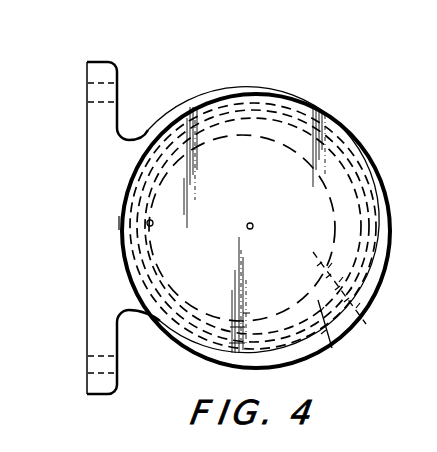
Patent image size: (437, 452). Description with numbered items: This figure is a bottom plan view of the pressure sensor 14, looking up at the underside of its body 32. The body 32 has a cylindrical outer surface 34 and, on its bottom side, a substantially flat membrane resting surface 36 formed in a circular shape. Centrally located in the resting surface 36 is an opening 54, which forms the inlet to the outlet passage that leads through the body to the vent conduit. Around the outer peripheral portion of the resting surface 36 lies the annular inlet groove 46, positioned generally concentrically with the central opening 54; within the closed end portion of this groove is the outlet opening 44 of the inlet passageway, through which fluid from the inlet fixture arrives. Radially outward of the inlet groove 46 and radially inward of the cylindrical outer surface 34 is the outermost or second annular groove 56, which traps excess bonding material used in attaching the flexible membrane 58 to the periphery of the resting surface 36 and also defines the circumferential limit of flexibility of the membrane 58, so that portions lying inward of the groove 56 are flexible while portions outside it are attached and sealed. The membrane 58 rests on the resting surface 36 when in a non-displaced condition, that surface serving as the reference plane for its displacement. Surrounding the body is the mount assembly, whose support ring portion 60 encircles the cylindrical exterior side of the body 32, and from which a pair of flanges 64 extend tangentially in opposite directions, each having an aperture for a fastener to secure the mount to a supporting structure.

The pressure sensor 14 is at (234, 77).
The body 32 is at (352, 306).
The cylindrical outer surface 34 is at (310, 107).
The membrane resting surface 36 is at (382, 160).
The outlet opening 44 is at (147, 222).
The annular inlet groove 46 is at (332, 348).
The opening 54 is at (262, 193).
The second annular groove 56 is at (291, 110).
The flexible membrane 58 is at (220, 292).
The support ring portion 60 is at (202, 100).
The flanges 64 is at (119, 72).